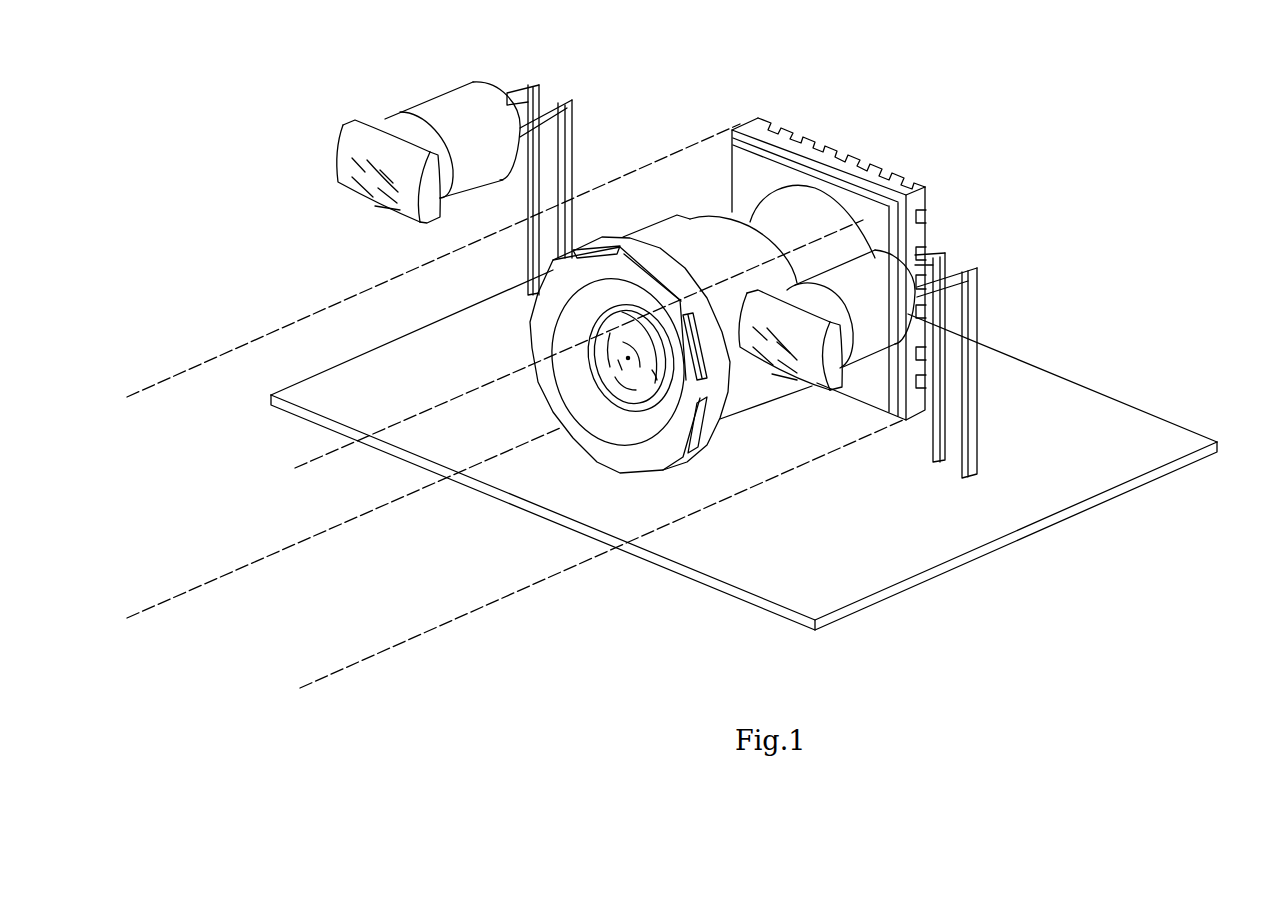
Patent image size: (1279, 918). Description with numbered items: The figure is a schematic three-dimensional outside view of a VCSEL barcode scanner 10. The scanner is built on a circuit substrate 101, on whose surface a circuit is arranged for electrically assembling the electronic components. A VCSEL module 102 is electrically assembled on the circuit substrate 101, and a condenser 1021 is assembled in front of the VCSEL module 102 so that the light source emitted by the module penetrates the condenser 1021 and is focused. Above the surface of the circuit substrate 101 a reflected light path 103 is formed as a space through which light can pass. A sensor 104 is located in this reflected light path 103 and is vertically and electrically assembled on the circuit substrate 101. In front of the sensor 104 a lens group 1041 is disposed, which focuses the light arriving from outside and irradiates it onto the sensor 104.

The VCSEL barcode scanner 10 is at (1103, 130).
The circuit substrate 101 is at (990, 523).
The VCSEL module 102 is at (900, 325).
The condenser 1021 is at (812, 378).
The reflected light path 103 is at (444, 553).
The sensor 104 is at (753, 176).
The lens group 1041 is at (567, 330).